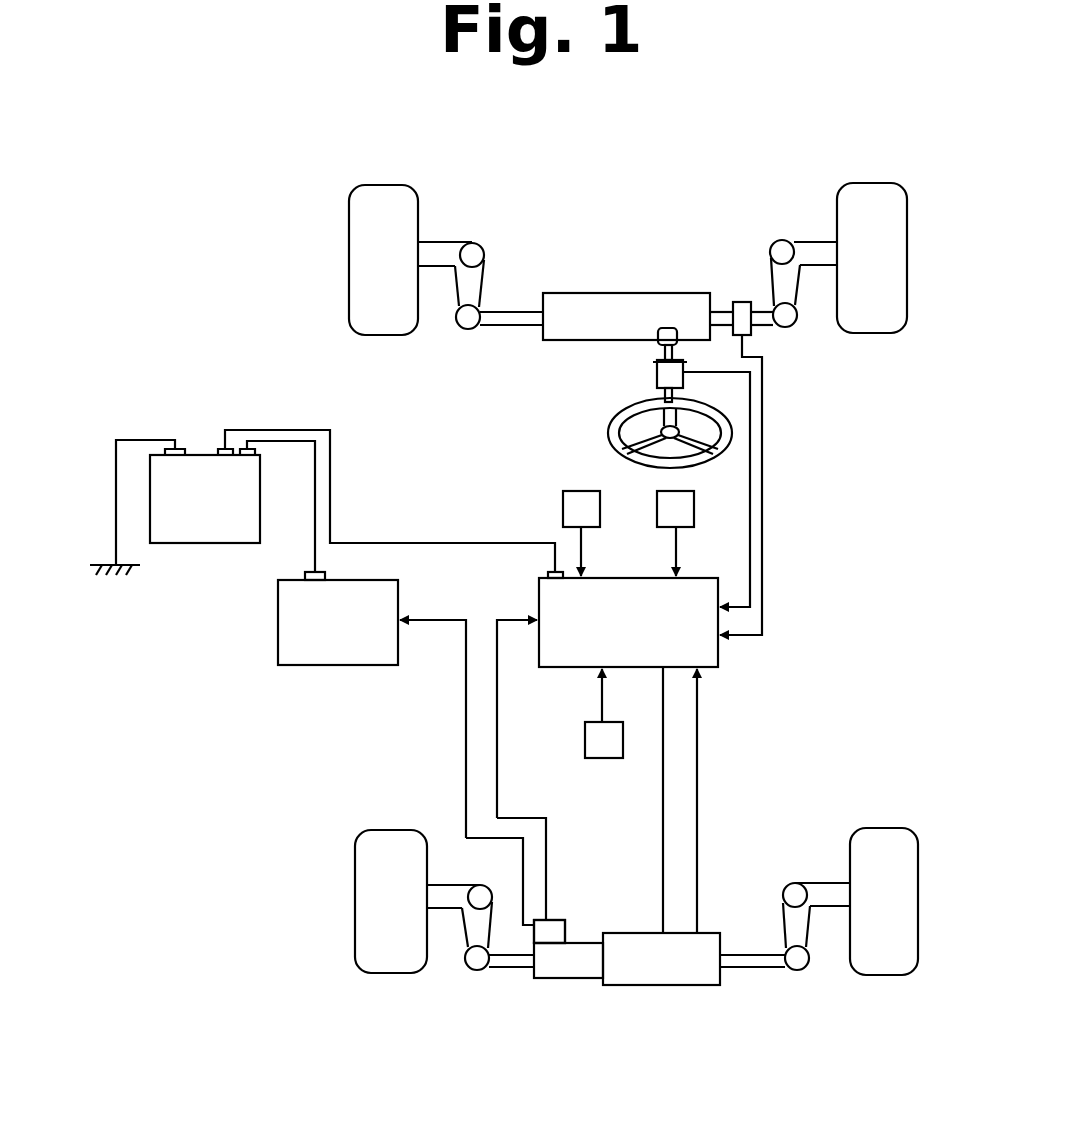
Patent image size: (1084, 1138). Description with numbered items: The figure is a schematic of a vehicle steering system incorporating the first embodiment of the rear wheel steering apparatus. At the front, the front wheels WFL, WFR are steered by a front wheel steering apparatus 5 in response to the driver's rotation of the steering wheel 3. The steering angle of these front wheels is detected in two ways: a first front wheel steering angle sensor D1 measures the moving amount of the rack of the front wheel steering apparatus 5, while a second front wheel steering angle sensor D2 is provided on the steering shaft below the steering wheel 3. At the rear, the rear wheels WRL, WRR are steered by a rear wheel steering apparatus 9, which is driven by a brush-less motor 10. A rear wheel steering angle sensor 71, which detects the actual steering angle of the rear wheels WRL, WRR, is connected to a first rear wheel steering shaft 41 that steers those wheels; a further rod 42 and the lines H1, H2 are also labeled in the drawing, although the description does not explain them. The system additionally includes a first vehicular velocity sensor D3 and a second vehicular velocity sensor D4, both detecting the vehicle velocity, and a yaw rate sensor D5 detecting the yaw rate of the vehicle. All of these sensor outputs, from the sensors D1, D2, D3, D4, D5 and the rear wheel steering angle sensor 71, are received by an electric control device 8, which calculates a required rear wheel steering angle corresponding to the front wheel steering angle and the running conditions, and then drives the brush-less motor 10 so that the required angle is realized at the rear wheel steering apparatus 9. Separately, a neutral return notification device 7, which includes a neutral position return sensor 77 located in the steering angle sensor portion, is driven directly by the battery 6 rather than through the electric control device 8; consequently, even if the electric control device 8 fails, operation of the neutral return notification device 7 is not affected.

The front wheel WFL is at (349, 270).
The front wheel WFR is at (878, 334).
The rear wheel WRL is at (375, 830).
The rear wheel WRR is at (880, 828).
The front wheel steering apparatus 5 is at (611, 291).
The first front wheel steering angle sensor D1 is at (742, 302).
The second front wheel steering angle sensor D2 is at (657, 372).
The steering wheel 3 is at (608, 432).
The battery 6 is at (200, 455).
The neutral return notification device 7 is at (278, 628).
The electric control device 8 is at (718, 655).
The first vehicular velocity sensor D3 is at (563, 507).
The second vehicular velocity sensor D4 is at (657, 511).
The yaw rate sensor D5 is at (585, 740).
The hydraulic line 1 H1 is at (497, 793).
The hydraulic line 2 H2 is at (466, 778).
The rear wheel steering angle sensor 71 is at (553, 920).
The neutral position return sensor 77 is at (549, 931).
The rear wheel steering apparatus 9 is at (626, 987).
The brush-less motor 10 is at (712, 933).
The first rear wheel steering shaft 41 is at (752, 968).
The left tie rod 42 is at (523, 968).